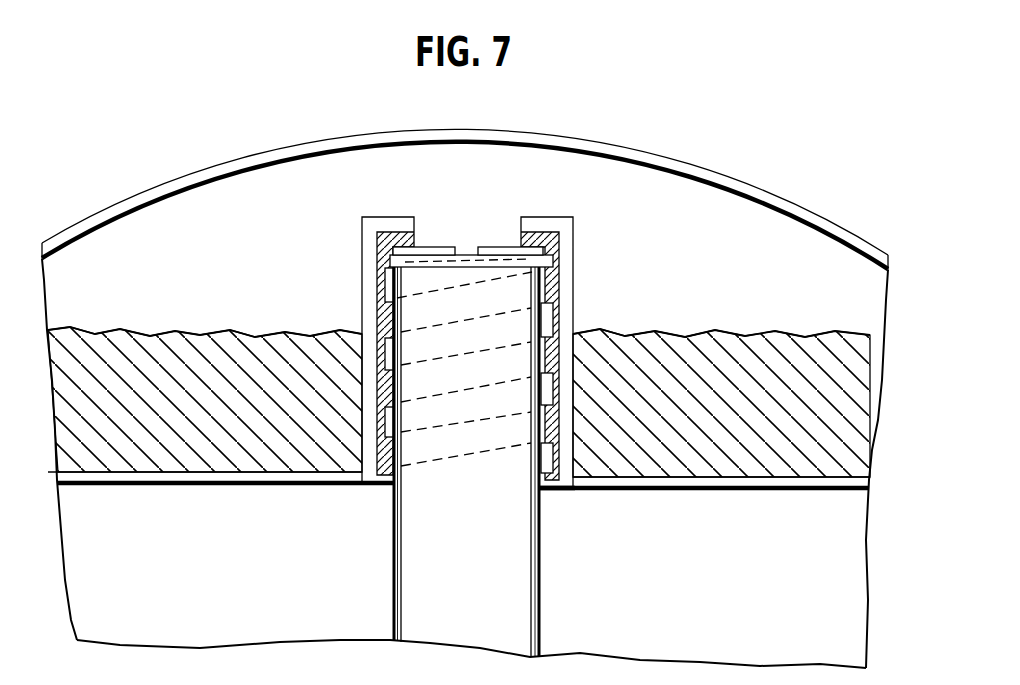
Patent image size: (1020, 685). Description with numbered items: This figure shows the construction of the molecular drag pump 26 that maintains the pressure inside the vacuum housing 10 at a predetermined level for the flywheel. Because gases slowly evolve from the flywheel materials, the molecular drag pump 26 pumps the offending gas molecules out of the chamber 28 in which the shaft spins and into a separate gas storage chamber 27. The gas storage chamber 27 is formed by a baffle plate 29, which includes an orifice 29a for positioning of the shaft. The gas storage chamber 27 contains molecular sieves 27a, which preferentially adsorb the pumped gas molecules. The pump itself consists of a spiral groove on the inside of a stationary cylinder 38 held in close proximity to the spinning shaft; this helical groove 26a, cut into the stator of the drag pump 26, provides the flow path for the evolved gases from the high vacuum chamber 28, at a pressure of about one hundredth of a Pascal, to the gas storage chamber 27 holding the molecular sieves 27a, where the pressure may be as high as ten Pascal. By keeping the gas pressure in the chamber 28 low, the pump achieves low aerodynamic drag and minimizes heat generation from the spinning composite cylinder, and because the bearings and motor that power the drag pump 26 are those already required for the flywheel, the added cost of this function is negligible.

The vacuum housing 10 is at (278, 156).
The gas storage chamber 27 is at (725, 223).
The molecular sieves 27a is at (177, 330).
The molecular drag pump 26 is at (362, 440).
The helical groove 26a is at (391, 492).
The chamber 28 is at (220, 599).
The baffle plate 29 is at (717, 490).
The orifice 29a is at (547, 496).
The stationary cylinder 38 is at (565, 298).